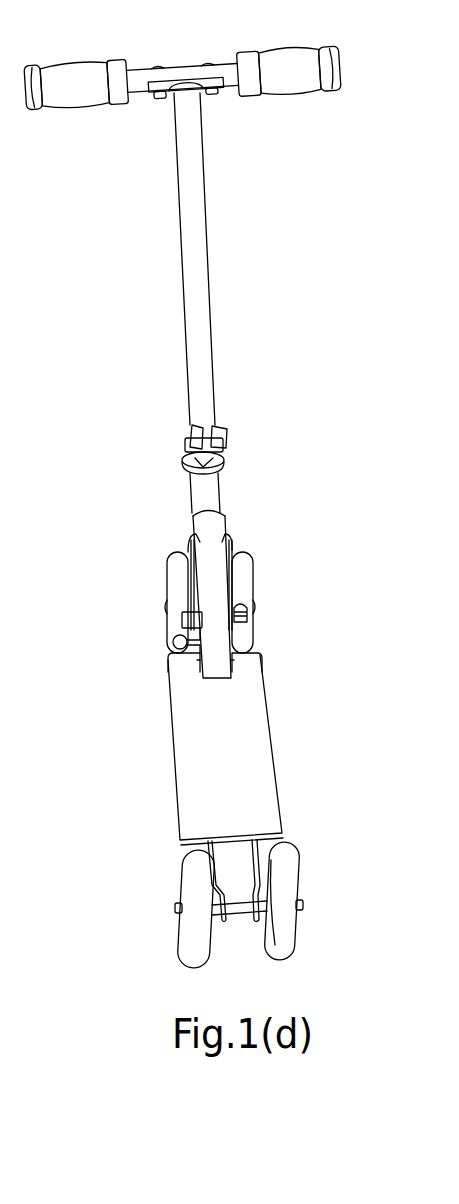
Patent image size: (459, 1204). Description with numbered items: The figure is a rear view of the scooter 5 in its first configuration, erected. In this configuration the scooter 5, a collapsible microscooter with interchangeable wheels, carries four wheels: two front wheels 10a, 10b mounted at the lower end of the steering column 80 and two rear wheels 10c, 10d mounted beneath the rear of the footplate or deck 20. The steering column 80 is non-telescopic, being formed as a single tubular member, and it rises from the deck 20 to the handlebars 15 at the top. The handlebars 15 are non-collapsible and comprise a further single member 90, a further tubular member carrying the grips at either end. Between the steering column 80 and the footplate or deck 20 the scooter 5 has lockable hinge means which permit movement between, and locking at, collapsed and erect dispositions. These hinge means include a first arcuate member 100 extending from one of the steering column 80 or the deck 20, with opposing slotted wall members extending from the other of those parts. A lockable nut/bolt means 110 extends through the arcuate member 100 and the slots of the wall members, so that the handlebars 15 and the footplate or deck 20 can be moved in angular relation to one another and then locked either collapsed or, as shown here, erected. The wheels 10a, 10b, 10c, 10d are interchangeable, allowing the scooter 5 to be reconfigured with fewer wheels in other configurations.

The scooter 5 is at (262, 368).
The handlebars 15 is at (138, 91).
The steering column 80 is at (197, 245).
The first arcuate member 100 is at (217, 605).
The lockable nut/bolt means 110 is at (192, 618).
The further single member 90 is at (215, 658).
The footplate or deck 20 is at (235, 758).
The front wheel 10a is at (178, 557).
The front wheel 10b is at (242, 555).
The rear wheel 10c is at (192, 892).
The rear wheel 10d is at (287, 878).